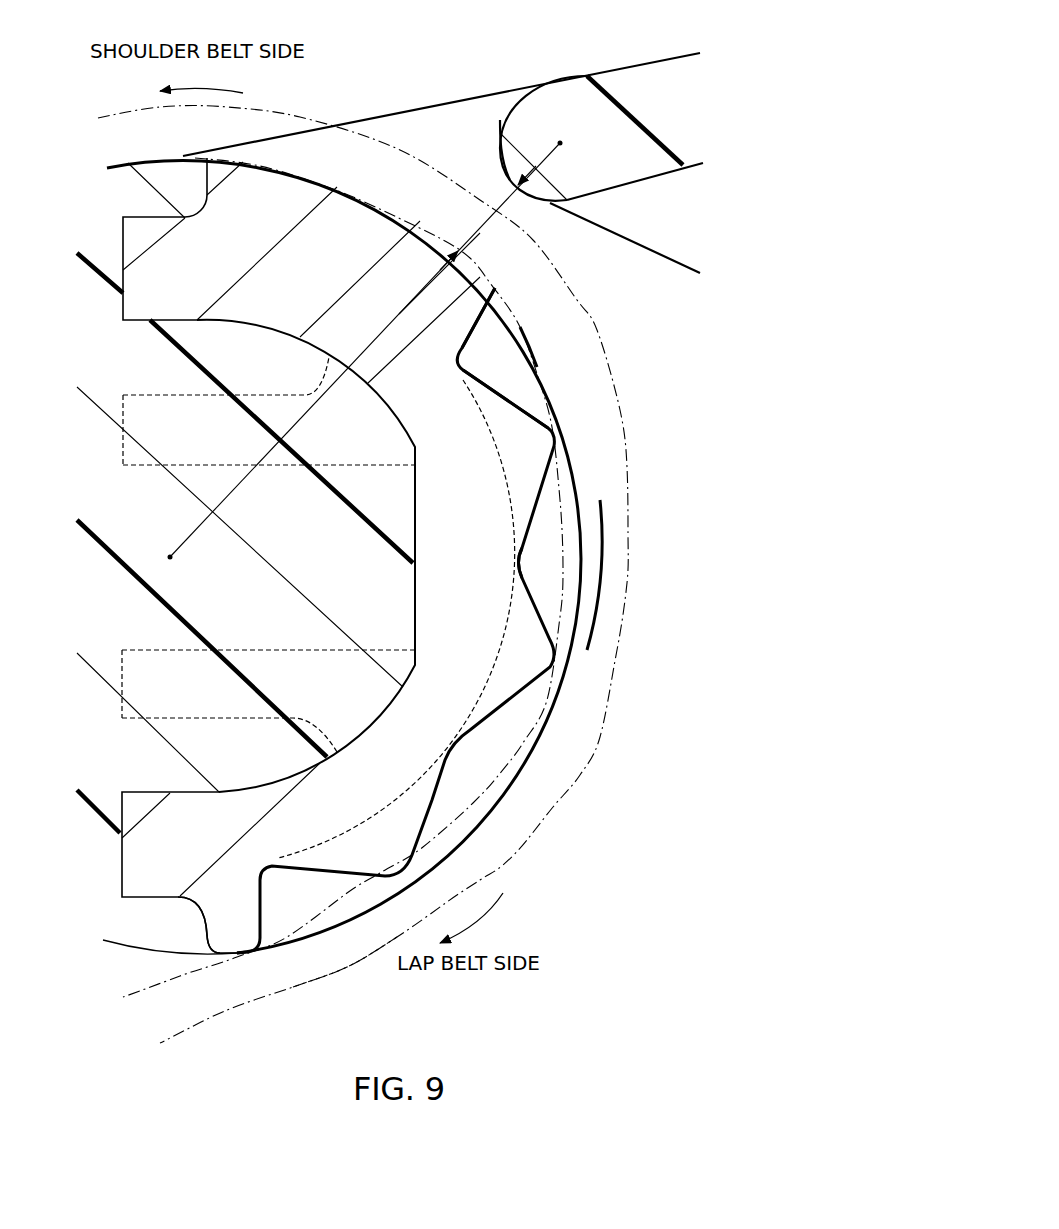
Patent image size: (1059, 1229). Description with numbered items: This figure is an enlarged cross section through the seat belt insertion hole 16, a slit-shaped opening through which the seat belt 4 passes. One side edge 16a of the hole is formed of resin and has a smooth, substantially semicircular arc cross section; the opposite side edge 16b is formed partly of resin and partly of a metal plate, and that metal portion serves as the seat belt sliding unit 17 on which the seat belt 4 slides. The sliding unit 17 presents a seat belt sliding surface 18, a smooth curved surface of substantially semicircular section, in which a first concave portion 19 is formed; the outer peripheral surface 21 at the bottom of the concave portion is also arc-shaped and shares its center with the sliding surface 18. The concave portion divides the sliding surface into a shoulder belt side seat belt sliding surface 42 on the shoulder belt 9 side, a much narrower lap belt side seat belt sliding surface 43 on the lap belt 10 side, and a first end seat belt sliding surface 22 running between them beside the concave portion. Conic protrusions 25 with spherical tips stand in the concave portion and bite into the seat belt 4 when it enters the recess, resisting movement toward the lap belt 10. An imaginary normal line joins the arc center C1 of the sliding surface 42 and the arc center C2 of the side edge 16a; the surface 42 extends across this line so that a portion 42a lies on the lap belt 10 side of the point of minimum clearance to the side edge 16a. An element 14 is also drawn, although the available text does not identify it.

The seat belt 4 is at (302, 116).
The shoulder belt 9 is at (124, 114).
The lap belt 10 is at (337, 973).
The spool 14 is at (613, 117).
The seat belt insertion hole 16 is at (493, 197).
The side edge 16a is at (497, 147).
The side edge 16b is at (533, 333).
The seat belt sliding unit 17 is at (441, 597).
The seat belt sliding surface 18 is at (602, 607).
The first concave portion 19 is at (470, 340).
The outer peripheral surface 21 is at (510, 488).
The first end seat belt sliding surface 22 is at (580, 425).
The protrusions 25 is at (557, 451).
The shoulder belt side seat belt sliding surface 42 is at (363, 193).
The portion of the shoulder belt side seat belt sliding surface 42a is at (483, 273).
The lap belt side seat belt sliding surface 43 is at (237, 957).
The arc center C1 is at (352, 356).
The arc center C2 is at (552, 155).